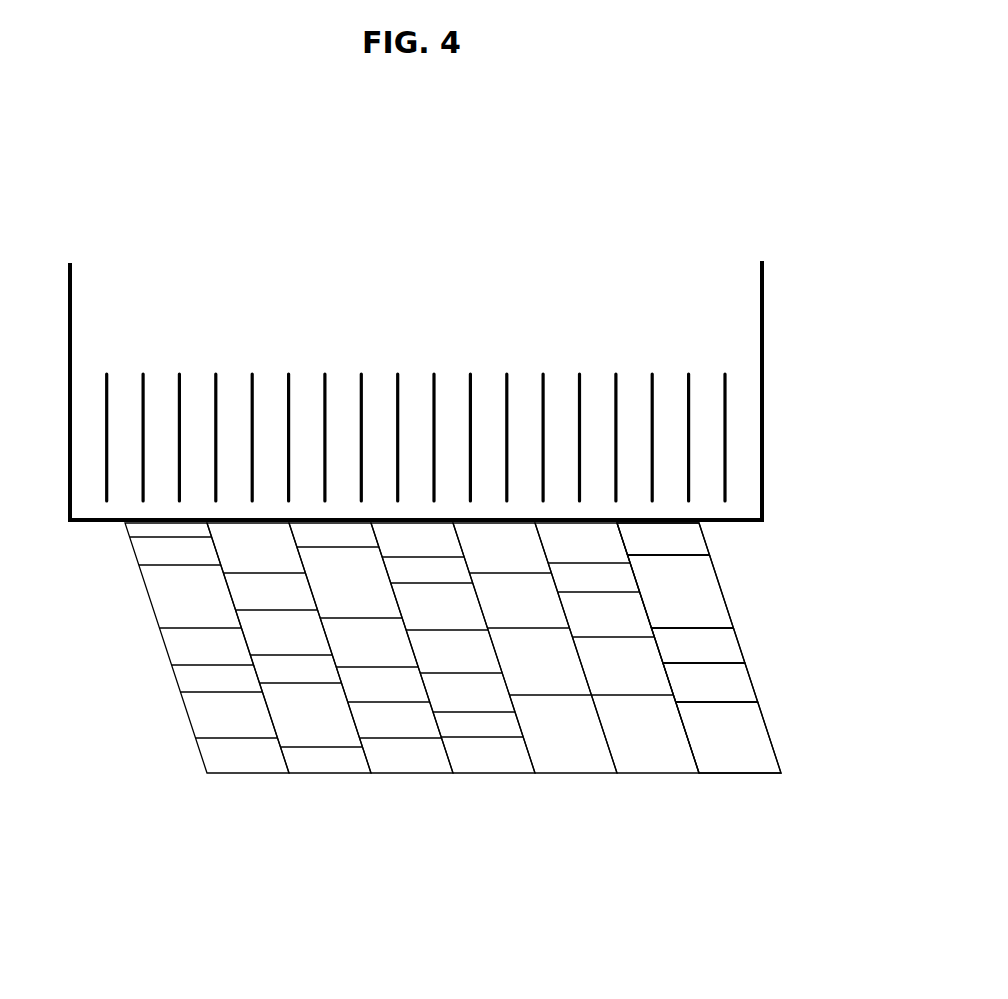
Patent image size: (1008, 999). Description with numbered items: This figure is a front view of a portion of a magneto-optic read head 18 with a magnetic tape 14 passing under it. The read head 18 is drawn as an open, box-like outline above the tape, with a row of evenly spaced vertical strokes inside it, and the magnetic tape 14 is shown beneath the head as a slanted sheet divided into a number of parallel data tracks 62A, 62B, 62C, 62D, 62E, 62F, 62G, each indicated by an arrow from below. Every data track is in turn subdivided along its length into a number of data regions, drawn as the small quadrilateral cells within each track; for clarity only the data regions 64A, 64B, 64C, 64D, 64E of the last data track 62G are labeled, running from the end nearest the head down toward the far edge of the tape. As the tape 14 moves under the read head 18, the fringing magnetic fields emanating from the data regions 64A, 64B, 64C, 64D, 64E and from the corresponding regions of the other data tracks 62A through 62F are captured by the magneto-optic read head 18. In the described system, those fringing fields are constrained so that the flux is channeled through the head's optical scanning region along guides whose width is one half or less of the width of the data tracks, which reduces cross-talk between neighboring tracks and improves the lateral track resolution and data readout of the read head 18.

The magnetic tape 14 is at (486, 721).
The magneto-optic read head 18 is at (727, 247).
The data track 62A is at (253, 783).
The data track 62B is at (333, 783).
The data track 62C is at (417, 783).
The data track 62D is at (497, 783).
The data track 62E is at (577, 792).
The data track 62F is at (660, 792).
The data track 62G is at (765, 717).
The data region 64A is at (680, 535).
The data region 64B is at (678, 592).
The data region 64C is at (695, 645).
The data region 64D is at (703, 677).
The data region 64E is at (733, 745).